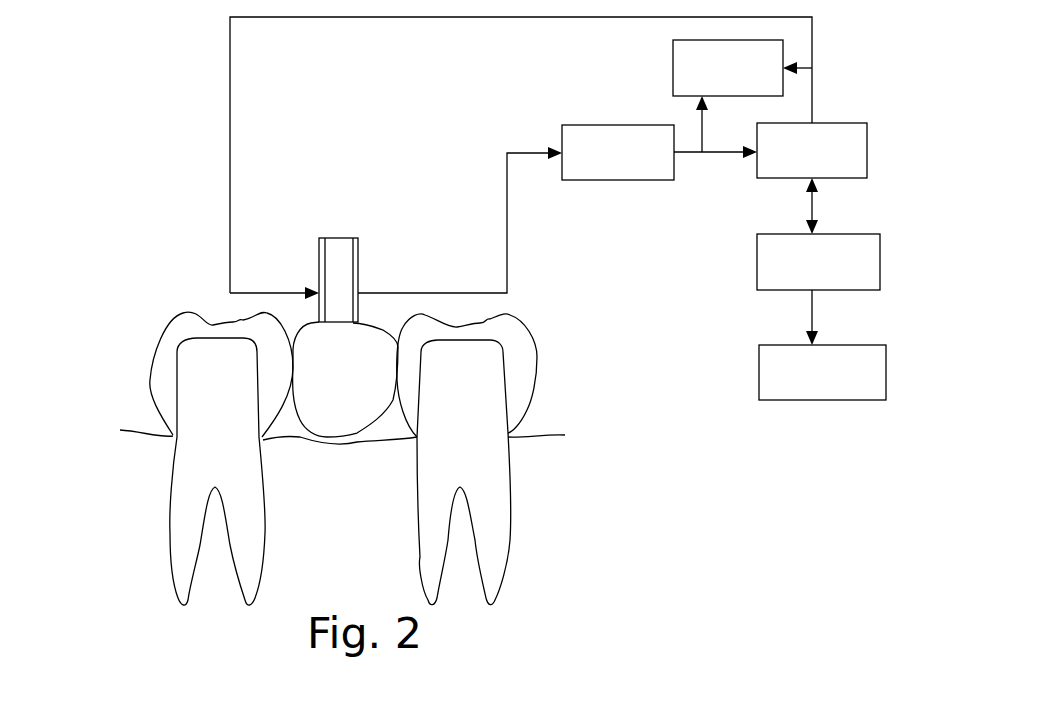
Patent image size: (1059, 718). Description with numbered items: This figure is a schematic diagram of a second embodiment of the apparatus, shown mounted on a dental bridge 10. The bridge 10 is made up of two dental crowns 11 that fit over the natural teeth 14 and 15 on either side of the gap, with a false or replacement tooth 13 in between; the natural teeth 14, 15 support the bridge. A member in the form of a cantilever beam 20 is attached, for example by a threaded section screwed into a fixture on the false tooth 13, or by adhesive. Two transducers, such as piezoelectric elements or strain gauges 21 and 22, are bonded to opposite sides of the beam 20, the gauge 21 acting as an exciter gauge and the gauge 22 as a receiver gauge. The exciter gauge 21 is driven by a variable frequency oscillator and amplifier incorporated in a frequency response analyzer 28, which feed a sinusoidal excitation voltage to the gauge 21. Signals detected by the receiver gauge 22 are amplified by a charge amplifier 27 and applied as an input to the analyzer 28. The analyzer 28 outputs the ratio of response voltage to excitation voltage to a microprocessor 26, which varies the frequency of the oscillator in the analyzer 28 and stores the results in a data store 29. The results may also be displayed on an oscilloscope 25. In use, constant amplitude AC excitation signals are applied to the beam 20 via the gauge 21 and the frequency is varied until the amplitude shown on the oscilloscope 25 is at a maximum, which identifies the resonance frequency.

The dental bridge 10 is at (166, 285).
The dental crown 11 is at (160, 321).
The false tooth 13 is at (343, 422).
The natural tooth 14 is at (173, 537).
The natural tooth 15 is at (510, 542).
The cantilever beam 20 is at (338, 238).
The exciter gauge 21 is at (317, 267).
The receiver gauge 22 is at (360, 267).
The oscilloscope 25 is at (728, 68).
The microprocessor 26 is at (818, 262).
The charge amplifier 27 is at (618, 152).
The frequency response analyzer 28 is at (812, 150).
The data store 29 is at (822, 372).